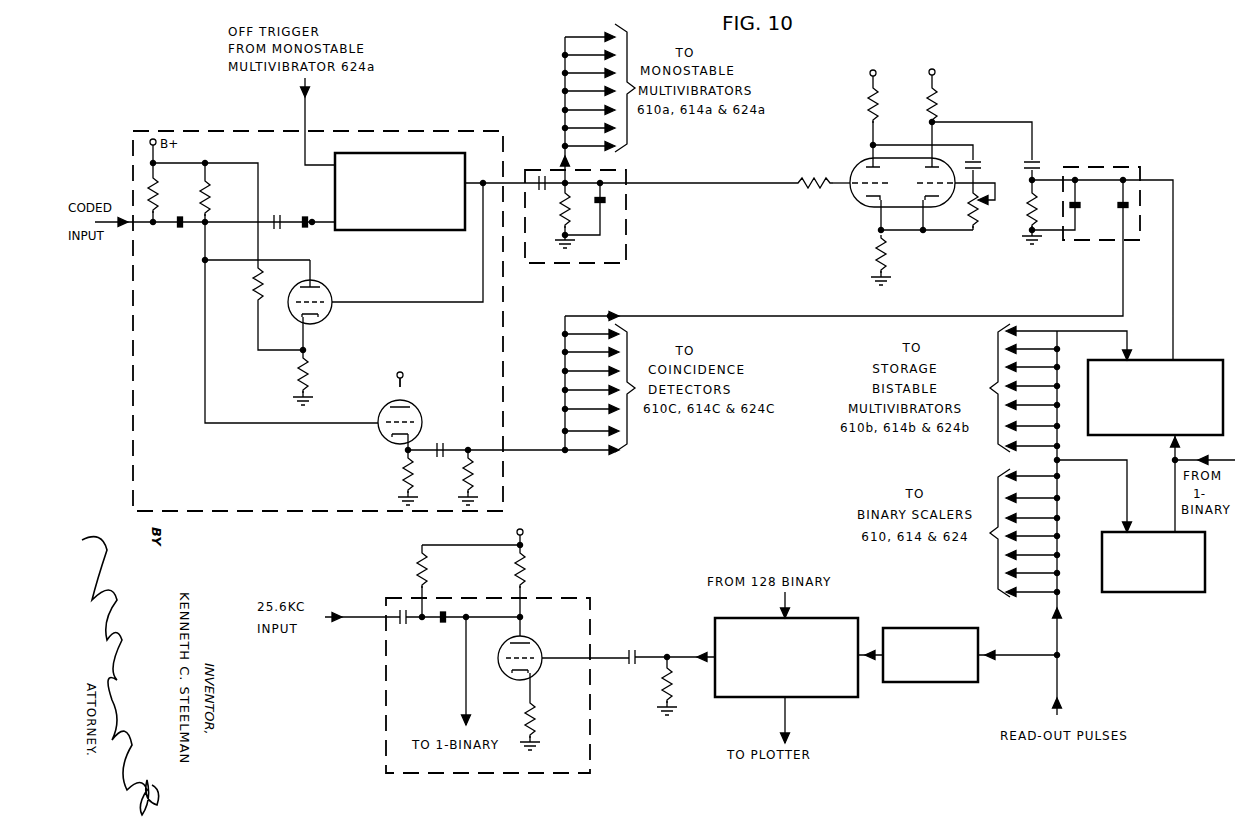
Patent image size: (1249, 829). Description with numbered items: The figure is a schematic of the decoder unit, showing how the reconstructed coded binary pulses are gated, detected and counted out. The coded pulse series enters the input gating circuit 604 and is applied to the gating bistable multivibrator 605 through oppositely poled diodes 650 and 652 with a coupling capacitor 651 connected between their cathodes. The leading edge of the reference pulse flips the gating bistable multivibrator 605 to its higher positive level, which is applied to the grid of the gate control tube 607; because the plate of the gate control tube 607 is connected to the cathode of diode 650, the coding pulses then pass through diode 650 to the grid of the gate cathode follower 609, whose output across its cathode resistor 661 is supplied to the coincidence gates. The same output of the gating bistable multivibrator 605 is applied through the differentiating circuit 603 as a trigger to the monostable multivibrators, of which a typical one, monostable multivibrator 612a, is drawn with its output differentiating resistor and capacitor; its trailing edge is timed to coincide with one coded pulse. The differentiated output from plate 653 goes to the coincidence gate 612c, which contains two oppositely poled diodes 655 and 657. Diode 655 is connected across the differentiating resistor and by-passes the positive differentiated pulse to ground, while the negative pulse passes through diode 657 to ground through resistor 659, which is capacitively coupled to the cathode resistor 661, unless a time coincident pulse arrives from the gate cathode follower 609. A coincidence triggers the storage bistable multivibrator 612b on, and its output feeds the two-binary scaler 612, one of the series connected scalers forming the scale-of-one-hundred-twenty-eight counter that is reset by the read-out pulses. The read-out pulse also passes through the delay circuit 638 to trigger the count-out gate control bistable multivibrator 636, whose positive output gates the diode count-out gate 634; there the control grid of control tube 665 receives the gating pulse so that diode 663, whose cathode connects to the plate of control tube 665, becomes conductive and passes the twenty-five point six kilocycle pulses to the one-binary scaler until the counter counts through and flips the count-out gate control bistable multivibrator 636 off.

The input gating circuit 604 is at (172, 131).
The diode 650 is at (178, 225).
The coupling capacitor 651 is at (275, 215).
The diode 652 is at (303, 229).
The gating bistable multivibrator 605 is at (404, 231).
The gate control tube 607 is at (327, 315).
The gate cathode follower 609 is at (414, 408).
The cathode resistor 661 is at (398, 473).
The resistor 659 is at (465, 487).
The differentiating circuit 603 is at (627, 254).
The monostable multivibrator 612a is at (852, 165).
The plate 653 is at (934, 121).
The coincidence gate 612c is at (1100, 165).
The diode 655 is at (1080, 207).
The diode 657 is at (1128, 209).
The storage bistable multivibrator 612b is at (1138, 435).
The 2-binary scaler 612 is at (1120, 593).
The diode count-out gate 634 is at (540, 598).
The diode 663 is at (440, 625).
The control tube 665 is at (508, 676).
The count-out gate control bistable multivibrator 636 is at (738, 699).
The delay circuit 638 is at (920, 683).